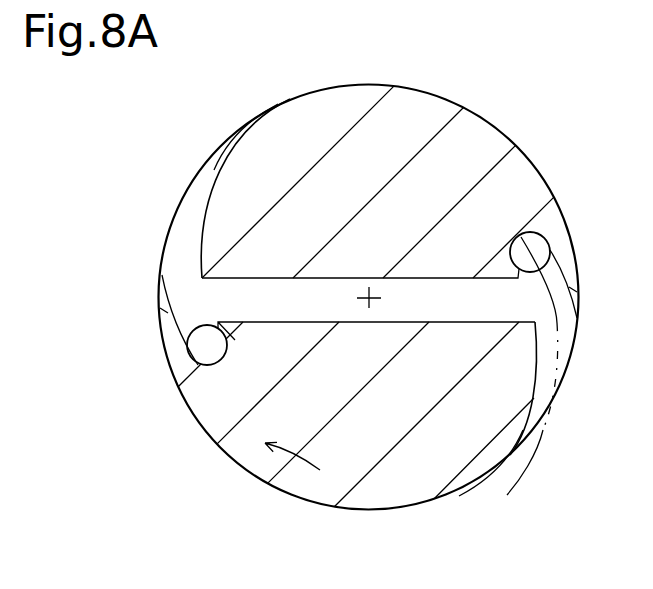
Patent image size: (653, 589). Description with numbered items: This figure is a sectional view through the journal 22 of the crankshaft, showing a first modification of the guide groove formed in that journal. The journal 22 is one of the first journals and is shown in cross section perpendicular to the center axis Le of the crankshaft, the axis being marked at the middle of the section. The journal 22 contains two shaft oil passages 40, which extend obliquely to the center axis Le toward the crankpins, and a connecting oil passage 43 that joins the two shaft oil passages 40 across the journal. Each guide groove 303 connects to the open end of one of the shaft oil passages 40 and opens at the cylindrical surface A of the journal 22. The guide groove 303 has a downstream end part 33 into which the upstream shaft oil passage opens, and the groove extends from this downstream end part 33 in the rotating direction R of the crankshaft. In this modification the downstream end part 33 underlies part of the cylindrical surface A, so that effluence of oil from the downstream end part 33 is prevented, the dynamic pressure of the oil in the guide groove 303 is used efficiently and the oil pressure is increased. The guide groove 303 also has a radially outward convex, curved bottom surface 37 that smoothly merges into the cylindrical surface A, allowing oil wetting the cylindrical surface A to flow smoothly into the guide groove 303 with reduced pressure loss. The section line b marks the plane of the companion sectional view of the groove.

The journal 22 is at (338, 113).
The connecting oil passage 43 is at (308, 300).
The guide groove 303 is at (603, 380).
The shaft oil passage 40 is at (212, 347).
The downstream end part 33 is at (562, 293).
The curved bottom surface 37 is at (542, 365).
The center axis Le is at (364, 290).
The cylindrical surface A is at (563, 217).
The rotating direction R is at (295, 460).
The section line b- b is at (514, 200).